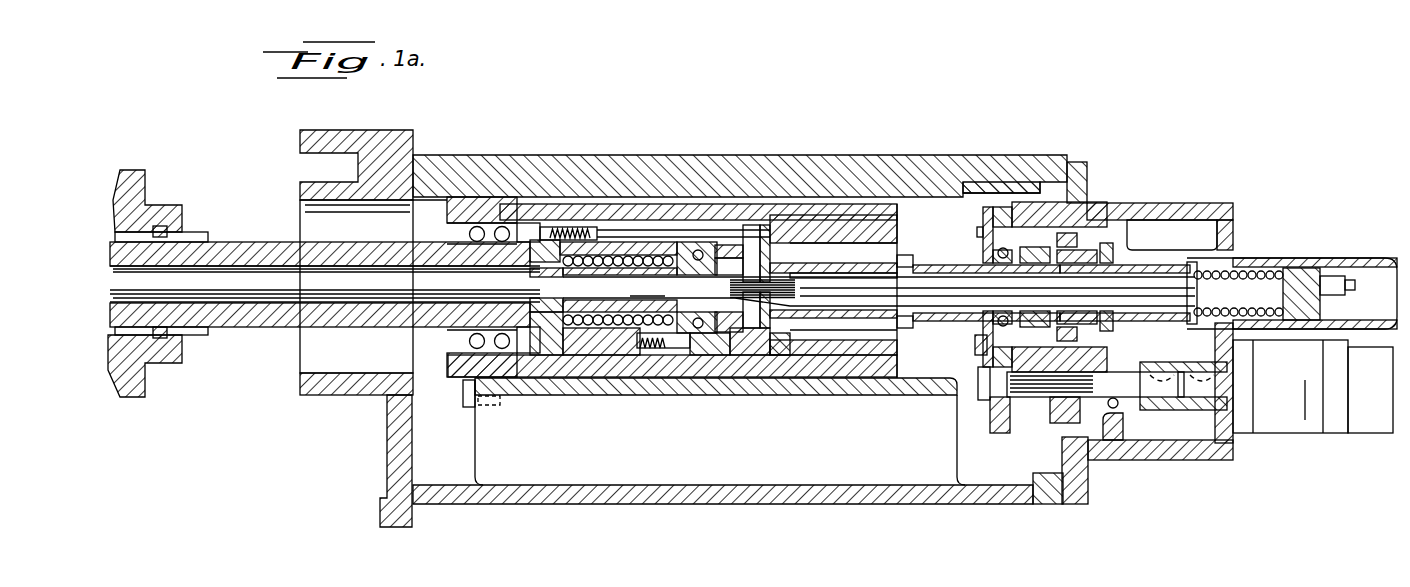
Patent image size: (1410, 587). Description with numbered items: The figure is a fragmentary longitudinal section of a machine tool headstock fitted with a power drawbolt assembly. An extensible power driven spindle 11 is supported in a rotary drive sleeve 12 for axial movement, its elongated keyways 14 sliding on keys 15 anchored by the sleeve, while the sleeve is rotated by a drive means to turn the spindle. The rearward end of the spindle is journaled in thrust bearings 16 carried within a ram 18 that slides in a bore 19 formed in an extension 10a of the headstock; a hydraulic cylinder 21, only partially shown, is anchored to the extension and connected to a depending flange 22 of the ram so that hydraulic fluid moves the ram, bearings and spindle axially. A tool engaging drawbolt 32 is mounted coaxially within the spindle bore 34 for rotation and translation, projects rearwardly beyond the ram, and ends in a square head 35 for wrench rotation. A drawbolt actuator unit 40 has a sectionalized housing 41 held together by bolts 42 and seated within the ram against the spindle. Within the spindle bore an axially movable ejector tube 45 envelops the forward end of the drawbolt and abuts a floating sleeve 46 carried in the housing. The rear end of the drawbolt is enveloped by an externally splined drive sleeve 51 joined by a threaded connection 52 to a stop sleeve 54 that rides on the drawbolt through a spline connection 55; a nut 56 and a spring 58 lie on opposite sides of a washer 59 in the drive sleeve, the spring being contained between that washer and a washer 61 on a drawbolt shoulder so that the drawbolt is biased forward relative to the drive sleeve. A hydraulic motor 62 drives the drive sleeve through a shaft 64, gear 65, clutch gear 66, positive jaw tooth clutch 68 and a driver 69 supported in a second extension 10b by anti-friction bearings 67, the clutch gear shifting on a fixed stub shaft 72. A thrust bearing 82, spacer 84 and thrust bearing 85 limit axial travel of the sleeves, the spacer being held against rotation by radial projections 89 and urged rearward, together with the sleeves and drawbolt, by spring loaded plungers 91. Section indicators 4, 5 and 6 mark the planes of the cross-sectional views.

The section line 4- 4 is at (560, 132).
The section line 5- 5 is at (727, 262).
The section line 6- 6 is at (762, 204).
The headstock extension 10a is at (933, 157).
The headstock extension 10b is at (1176, 211).
The spindle 11 is at (276, 330).
The rotary drive sleeve 12 is at (162, 162).
The keyways 14 is at (183, 336).
The keys 15 is at (167, 232).
The thrust bearings 16 is at (467, 234).
The ram 18 is at (872, 198).
The bore 19 is at (855, 203).
The hydraulic cylinder 21 is at (484, 407).
The depending flange 22 is at (466, 404).
The drawbolt 32 is at (240, 290).
The bore 34 is at (228, 275).
The square head 35 is at (1352, 287).
The drawbolt actuator unit 40 is at (617, 220).
The housing 41 is at (635, 232).
The bolts 42 is at (597, 240).
The ejector tube 45 is at (340, 267).
The floating sleeve 46 is at (618, 278).
The drive sleeve 51 is at (892, 256).
The threaded connection 52 is at (800, 268).
The stop sleeve 54 is at (649, 301).
The spline connection 55 is at (818, 300).
The nut 56 is at (1318, 268).
The spring 58 is at (1268, 282).
The washer 59 is at (1313, 278).
The washer 61 is at (1197, 273).
The hydraulic motor 62 is at (1273, 430).
The shaft 64 is at (1027, 407).
The gear 65 is at (1062, 420).
The clutch gear 66 is at (1087, 237).
The anti-friction bearings 67 is at (980, 331).
The positive jaw tooth clutch 68 is at (1033, 247).
The driver 69 is at (933, 263).
The stub shaft 72 is at (1113, 264).
The thrust bearing 82 is at (673, 380).
The spacer 84 is at (716, 240).
The thrust bearing 85 is at (770, 233).
The radial projections 89 is at (717, 380).
The spring loaded plungers 91 is at (637, 380).